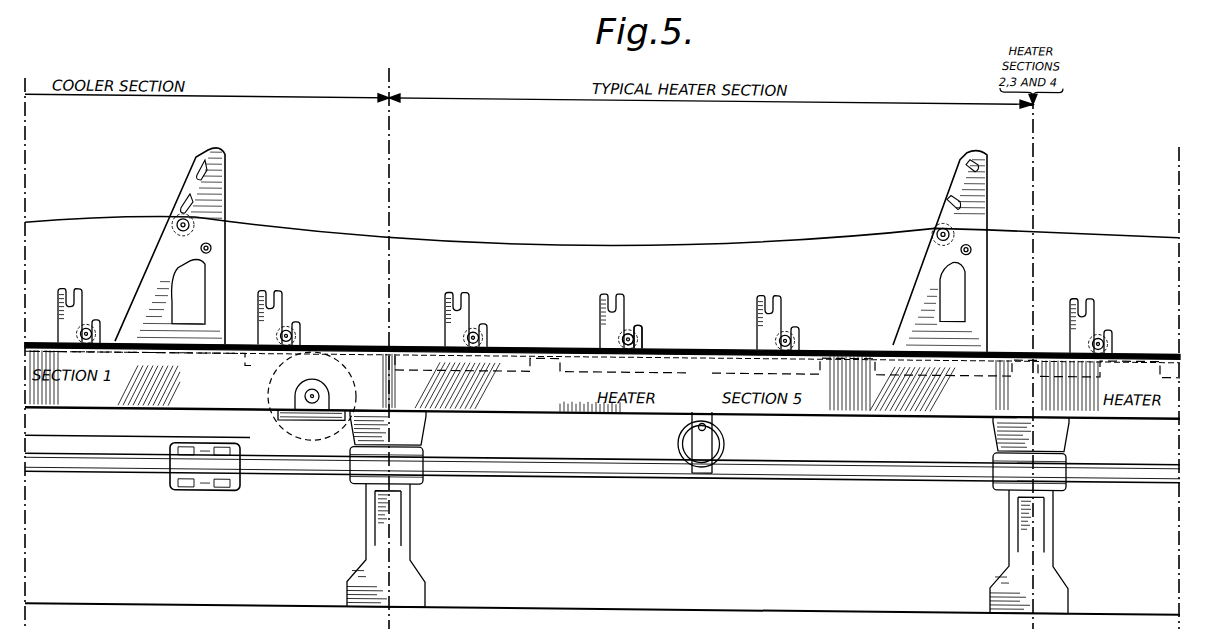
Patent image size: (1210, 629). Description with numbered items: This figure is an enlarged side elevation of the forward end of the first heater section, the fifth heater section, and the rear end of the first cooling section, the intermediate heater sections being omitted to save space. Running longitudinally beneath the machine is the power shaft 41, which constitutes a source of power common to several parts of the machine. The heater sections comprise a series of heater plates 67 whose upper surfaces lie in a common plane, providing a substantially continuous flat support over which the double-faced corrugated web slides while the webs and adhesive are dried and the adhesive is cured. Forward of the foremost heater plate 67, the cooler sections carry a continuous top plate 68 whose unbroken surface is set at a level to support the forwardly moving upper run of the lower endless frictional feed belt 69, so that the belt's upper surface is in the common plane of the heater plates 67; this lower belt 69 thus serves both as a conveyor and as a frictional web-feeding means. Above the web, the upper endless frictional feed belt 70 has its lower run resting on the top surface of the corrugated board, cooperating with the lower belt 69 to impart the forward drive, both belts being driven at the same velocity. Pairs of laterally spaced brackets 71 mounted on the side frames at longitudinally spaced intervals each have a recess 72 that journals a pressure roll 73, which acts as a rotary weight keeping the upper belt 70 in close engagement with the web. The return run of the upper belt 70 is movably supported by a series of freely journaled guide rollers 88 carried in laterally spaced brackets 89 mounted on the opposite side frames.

The longitudinal power shaft 41 is at (612, 472).
The heater plates 67 is at (568, 366).
The continuous top plate 68 is at (197, 348).
The lower endless frictional feed belt 69 is at (252, 438).
The upper endless frictional feed belt 70 is at (345, 342).
The brackets 71 is at (605, 320).
The recess 72 is at (630, 327).
The pressure roll 73 is at (641, 327).
The guide rollers 88 is at (178, 218).
The brackets 89 is at (216, 257).